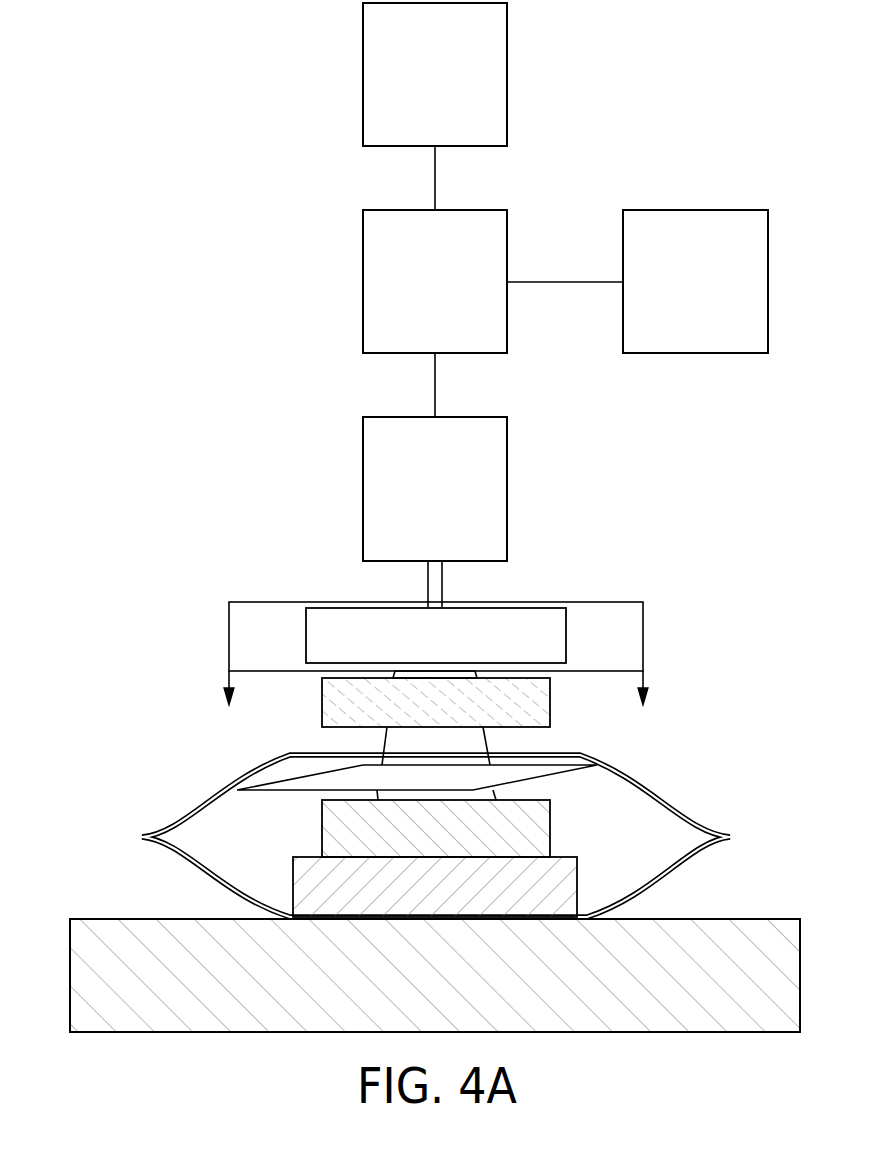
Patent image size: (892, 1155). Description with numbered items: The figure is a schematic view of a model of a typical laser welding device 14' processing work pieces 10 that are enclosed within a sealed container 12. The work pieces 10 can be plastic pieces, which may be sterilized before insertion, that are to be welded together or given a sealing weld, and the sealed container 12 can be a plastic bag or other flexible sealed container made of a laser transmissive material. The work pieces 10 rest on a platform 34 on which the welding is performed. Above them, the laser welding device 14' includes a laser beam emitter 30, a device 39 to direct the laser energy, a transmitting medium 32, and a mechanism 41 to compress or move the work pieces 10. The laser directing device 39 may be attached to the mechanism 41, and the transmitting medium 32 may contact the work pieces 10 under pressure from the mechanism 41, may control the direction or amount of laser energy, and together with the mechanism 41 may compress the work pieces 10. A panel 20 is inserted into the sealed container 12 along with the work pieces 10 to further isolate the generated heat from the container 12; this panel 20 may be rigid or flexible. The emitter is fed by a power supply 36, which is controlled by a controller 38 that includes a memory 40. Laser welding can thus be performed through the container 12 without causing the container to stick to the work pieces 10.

The memory 40 is at (448, 86).
The controller 38 is at (448, 294).
The power supply 36 is at (708, 294).
The laser beam emitter 30 is at (449, 501).
The laser welding device 14' is at (697, 64).
The mechanism 41 is at (272, 602).
The device to direct the laser energy 39 is at (550, 622).
The transmitting medium 32 is at (320, 702).
The panel 20 is at (542, 770).
The sealed container 12 is at (203, 813).
The work pieces 10 is at (523, 838).
The platform 34 is at (175, 937).